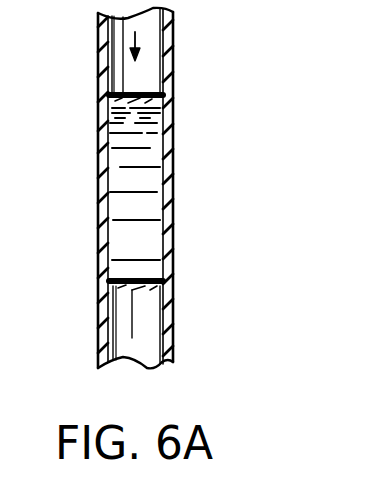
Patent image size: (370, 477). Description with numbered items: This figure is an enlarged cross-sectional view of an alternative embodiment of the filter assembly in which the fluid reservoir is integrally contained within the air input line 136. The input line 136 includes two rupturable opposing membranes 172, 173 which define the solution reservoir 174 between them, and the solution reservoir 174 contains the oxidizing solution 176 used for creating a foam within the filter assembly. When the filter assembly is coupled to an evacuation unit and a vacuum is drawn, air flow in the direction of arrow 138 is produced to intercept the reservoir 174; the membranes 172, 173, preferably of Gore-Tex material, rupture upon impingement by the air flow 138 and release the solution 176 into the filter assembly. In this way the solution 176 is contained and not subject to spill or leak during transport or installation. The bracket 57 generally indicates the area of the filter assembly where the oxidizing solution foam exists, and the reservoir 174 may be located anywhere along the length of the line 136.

The air input line 136 is at (92, 193).
The arrow indicating air flow 138 is at (140, 41).
The rupturable membrane 172 is at (150, 92).
The rupturable membrane 173 is at (153, 302).
The solution reservoir 174 is at (163, 181).
The oxidizing solution 176 is at (127, 207).
The bracket indicating area of foam 57 is at (12, 252).